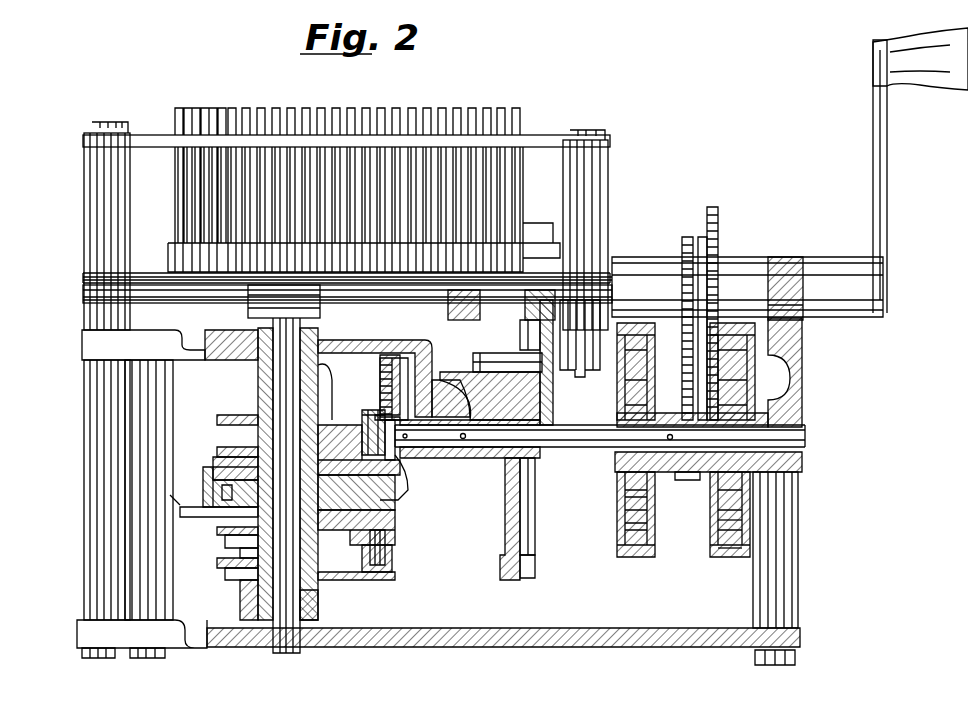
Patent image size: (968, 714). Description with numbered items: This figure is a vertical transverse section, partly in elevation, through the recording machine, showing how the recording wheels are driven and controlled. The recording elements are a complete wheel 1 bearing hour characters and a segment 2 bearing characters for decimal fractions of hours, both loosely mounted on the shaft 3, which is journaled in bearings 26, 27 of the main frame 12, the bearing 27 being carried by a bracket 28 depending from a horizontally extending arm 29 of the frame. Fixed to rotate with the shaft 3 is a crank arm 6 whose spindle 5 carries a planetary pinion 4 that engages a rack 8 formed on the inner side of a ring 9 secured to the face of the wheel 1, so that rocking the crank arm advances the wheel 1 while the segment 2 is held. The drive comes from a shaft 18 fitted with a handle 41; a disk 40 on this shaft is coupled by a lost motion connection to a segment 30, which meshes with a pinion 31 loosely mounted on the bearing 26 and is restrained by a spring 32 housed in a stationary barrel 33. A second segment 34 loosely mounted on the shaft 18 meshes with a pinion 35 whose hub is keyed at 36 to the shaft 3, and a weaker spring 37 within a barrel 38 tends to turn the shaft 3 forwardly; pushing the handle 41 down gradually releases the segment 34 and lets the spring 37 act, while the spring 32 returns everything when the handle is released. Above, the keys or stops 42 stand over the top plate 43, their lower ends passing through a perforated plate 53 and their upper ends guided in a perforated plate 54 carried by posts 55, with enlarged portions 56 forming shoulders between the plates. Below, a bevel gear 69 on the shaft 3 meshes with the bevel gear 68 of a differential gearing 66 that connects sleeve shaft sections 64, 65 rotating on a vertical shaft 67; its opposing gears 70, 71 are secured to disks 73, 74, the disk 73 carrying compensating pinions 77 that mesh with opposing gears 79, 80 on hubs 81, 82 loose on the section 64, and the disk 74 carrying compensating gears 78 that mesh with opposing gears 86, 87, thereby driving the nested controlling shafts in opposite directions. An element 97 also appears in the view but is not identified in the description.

The recording wheel 1 is at (500, 568).
The recording wheel segment 2 is at (553, 378).
The shaft 3 is at (805, 438).
The planetary pinion 4 is at (512, 338).
The spindle 5 is at (473, 363).
The crank arm 6 is at (476, 390).
The rack 8 is at (532, 553).
The ring 9 is at (535, 566).
The main frame 12 is at (197, 345).
The shaft 18 is at (332, 300).
The bearing 26 is at (805, 462).
The bearing 27 is at (425, 457).
The bracket 28 is at (410, 388).
The horizontally extending arm 29 is at (396, 340).
The segment 30 is at (740, 268).
The pinion 31 is at (700, 480).
The spring 32 is at (712, 525).
The barrel 33 is at (715, 540).
The segment 34 is at (690, 270).
The pinion 35 is at (690, 474).
The key 36 is at (670, 435).
The spring 37 is at (622, 491).
The barrel 38 is at (617, 503).
The disk 40 is at (719, 224).
The handle 41 is at (888, 235).
The keys or stops 42 is at (448, 109).
The top plate 43 is at (160, 270).
The perforated plate 53 is at (187, 243).
The perforated plate 54 is at (153, 140).
The posts 55 is at (88, 181).
The enlarged portions 56 is at (192, 181).
The shaft section 64 is at (315, 597).
The shaft section 65 is at (85, 276).
The differential gearing 66 is at (205, 480).
The vertical shaft 67 is at (282, 652).
The bevel gear 68 is at (393, 510).
The bevel gear 69 is at (405, 496).
The gear 70 is at (217, 530).
The gear 71 is at (320, 463).
The flange or disk 73 is at (225, 545).
The flange or disk 74 is at (218, 458).
The compensating pinions 77 is at (389, 546).
The compensating gears 78 is at (345, 418).
The gear 79 is at (226, 566).
The gear 80 is at (240, 547).
The hollow shaft section or hub 81 is at (258, 597).
The hollow shaft section or hub 82 is at (226, 560).
The gear 86 is at (250, 450).
The gear 87 is at (250, 418).
The block 97 is at (538, 228).